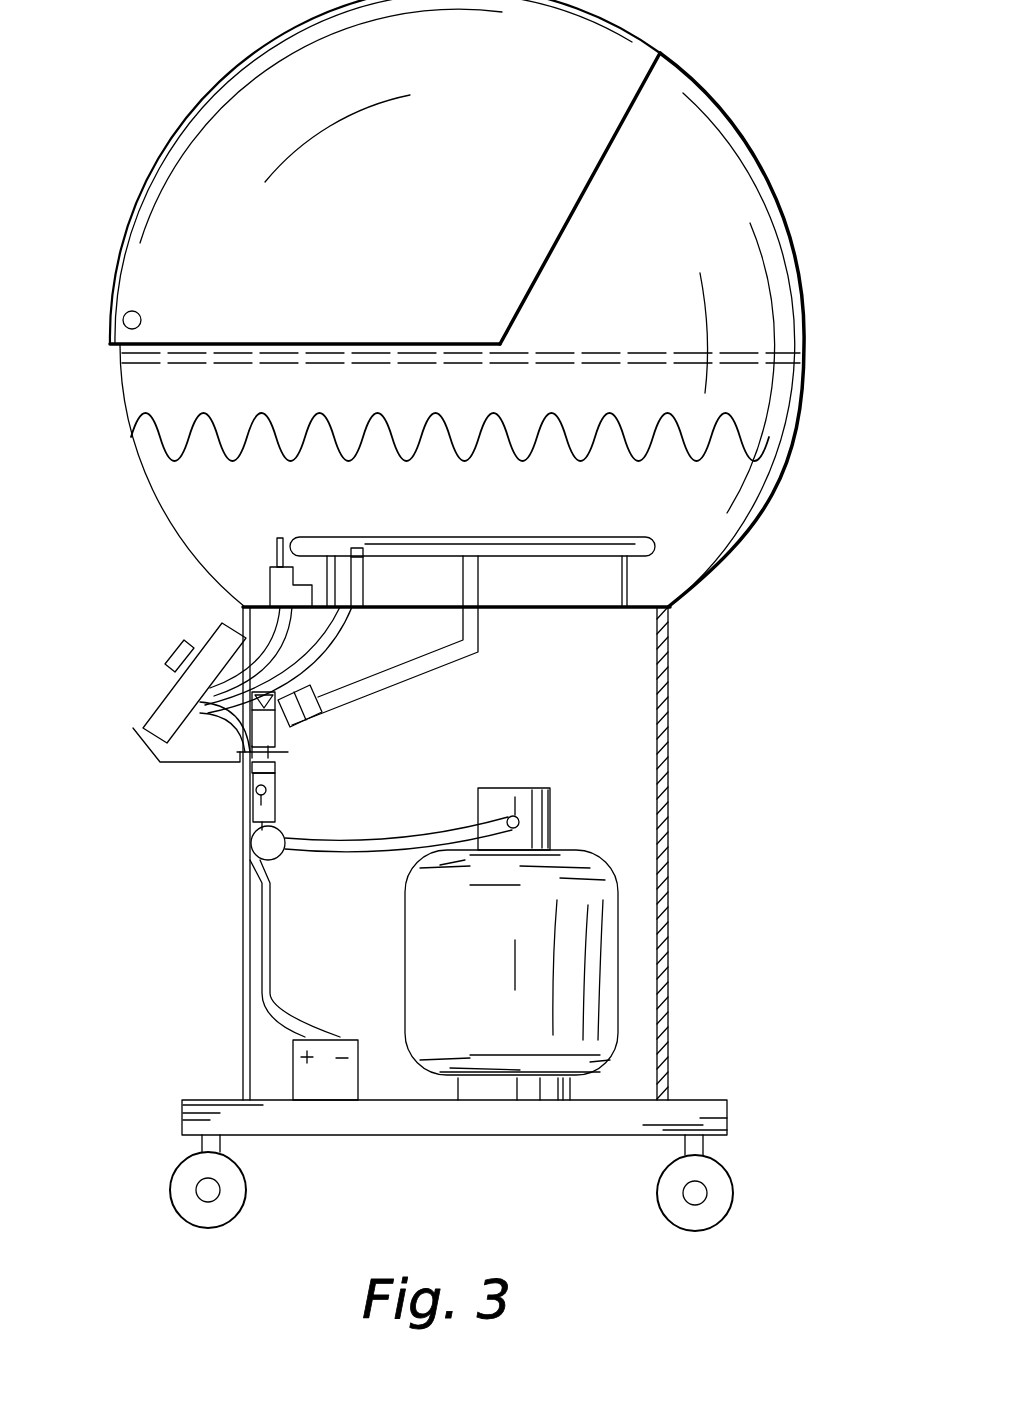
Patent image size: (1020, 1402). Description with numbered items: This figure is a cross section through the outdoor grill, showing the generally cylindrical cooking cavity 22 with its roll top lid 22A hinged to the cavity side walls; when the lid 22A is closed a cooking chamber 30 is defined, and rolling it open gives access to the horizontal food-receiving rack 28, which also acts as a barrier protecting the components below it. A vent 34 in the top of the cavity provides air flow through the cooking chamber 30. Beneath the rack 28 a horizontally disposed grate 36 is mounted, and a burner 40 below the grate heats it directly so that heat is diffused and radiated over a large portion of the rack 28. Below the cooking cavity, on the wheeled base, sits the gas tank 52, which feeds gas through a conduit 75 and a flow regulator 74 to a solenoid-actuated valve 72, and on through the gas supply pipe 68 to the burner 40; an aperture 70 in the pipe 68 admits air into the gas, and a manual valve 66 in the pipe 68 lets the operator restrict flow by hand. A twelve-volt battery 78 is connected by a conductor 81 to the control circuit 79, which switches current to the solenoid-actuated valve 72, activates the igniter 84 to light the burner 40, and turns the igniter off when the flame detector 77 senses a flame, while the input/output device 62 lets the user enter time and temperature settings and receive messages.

The cooking cavity 22 is at (123, 402).
The roll top lid 22A is at (147, 177).
The food-receiving rack 28 is at (737, 355).
The cooking chamber 30 is at (778, 288).
The vent 34 is at (662, 58).
The grate 36 is at (770, 418).
The burner 40 is at (563, 538).
The tank 52 is at (597, 987).
The input/output device 62 is at (188, 650).
The manual valve 66 is at (253, 787).
The gas supply pipe 68 is at (445, 665).
The aperture 70 is at (310, 690).
The solenoid-actuated valve 72 is at (277, 737).
The flow regulator 74 is at (285, 835).
The conduit 75 is at (312, 850).
The flame detector 77 is at (357, 560).
The battery 78 is at (315, 1103).
The control circuit 79 is at (172, 706).
The conductor 81 is at (262, 960).
The igniter 84 is at (270, 573).